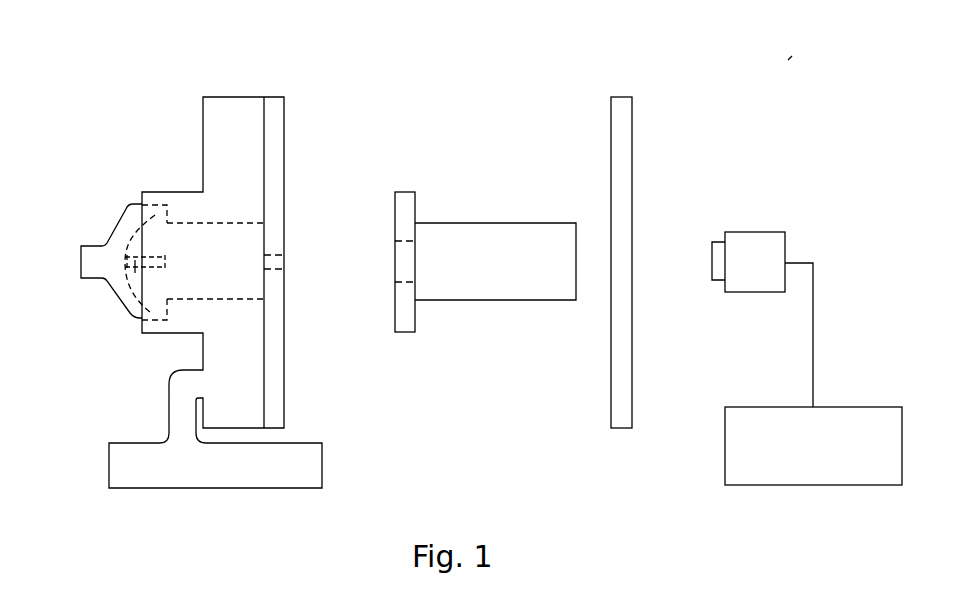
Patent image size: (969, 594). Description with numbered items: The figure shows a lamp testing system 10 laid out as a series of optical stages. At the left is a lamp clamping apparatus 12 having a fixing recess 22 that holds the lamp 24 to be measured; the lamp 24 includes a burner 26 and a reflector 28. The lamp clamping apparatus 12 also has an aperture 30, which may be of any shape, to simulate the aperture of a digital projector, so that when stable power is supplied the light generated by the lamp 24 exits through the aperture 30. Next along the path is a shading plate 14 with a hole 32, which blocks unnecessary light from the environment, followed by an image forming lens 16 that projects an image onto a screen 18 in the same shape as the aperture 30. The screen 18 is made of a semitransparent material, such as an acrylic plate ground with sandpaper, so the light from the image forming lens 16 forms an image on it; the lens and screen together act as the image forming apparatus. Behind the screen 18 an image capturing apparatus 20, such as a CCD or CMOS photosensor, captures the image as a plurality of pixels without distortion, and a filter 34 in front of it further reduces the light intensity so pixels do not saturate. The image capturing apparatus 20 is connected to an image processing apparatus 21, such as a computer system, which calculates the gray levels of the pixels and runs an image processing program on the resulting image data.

The lamp testing system 10 is at (790, 58).
The lamp clamping apparatus 12 is at (235, 90).
The shading plate 14 is at (412, 190).
The image forming lens 16 is at (535, 223).
The screen 18 is at (632, 138).
The image capturing apparatus 20 is at (768, 230).
The image processing apparatus 21 is at (850, 406).
The fixing recess 22 is at (156, 206).
The lamp 24 is at (93, 242).
The burner 26 is at (133, 284).
The reflector 28 is at (142, 298).
The aperture 30 is at (285, 262).
The hole 32 is at (403, 260).
The filter 34 is at (718, 280).